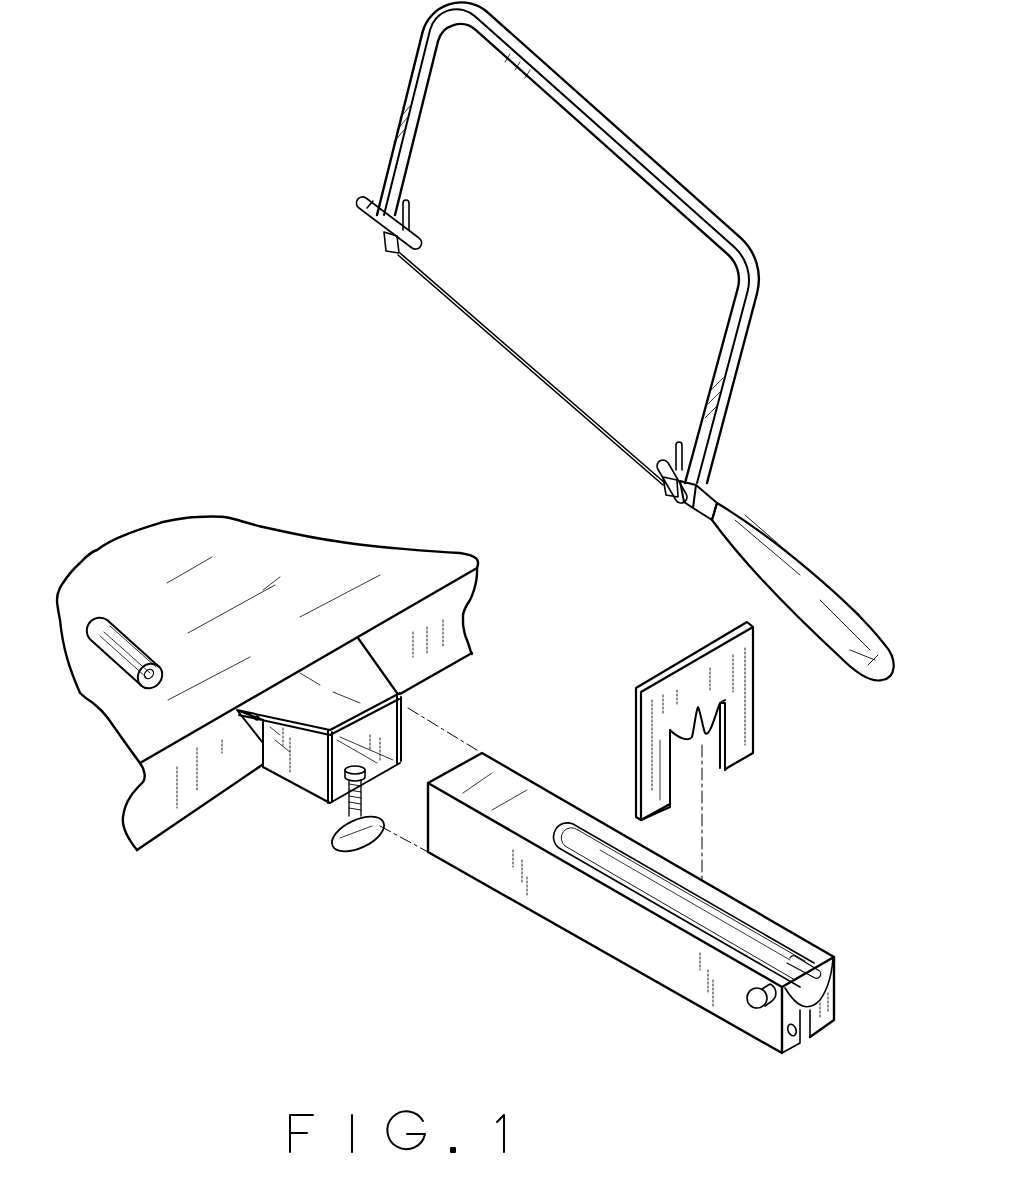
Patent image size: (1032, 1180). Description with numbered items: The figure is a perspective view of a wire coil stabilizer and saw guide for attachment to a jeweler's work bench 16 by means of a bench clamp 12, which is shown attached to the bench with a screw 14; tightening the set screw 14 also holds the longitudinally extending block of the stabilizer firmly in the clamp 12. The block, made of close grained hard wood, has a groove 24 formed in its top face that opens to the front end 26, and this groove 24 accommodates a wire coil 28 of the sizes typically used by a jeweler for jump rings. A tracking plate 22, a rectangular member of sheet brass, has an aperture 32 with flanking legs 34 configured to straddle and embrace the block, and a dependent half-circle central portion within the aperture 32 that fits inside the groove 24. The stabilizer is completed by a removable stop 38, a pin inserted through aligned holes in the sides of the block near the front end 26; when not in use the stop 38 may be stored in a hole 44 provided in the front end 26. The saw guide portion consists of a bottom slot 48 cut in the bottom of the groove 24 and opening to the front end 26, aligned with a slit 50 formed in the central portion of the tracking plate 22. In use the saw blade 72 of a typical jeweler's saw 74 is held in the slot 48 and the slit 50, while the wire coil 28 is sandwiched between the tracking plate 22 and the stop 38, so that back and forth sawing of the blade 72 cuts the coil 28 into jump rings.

The bench clamp 12 is at (383, 661).
The screw 14 is at (362, 853).
The jeweler's work bench 16 is at (97, 710).
The tracking plate 22 is at (753, 680).
The groove 24 is at (748, 923).
The front end 26 is at (828, 1008).
The wire coil 28 is at (137, 640).
The aperture 32 is at (708, 735).
The flanking legs 34 is at (733, 765).
The removable stop 38 is at (745, 998).
The hole 44 is at (787, 1035).
The bottom slot 48 is at (832, 1027).
The slit 50 is at (692, 738).
The saw blade 72 is at (517, 348).
The jeweler's saw 74 is at (632, 140).